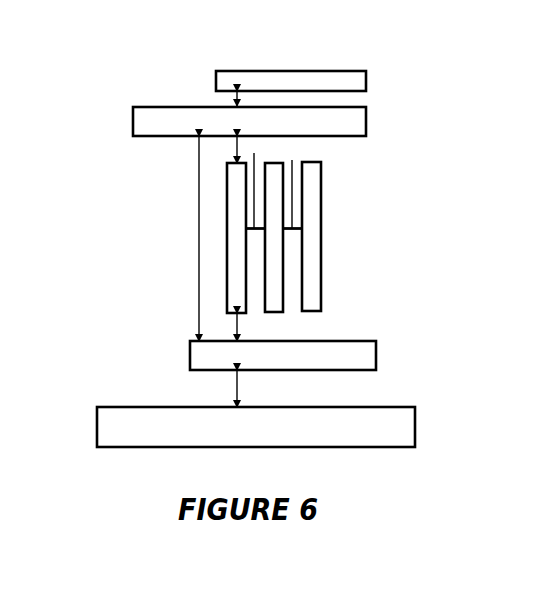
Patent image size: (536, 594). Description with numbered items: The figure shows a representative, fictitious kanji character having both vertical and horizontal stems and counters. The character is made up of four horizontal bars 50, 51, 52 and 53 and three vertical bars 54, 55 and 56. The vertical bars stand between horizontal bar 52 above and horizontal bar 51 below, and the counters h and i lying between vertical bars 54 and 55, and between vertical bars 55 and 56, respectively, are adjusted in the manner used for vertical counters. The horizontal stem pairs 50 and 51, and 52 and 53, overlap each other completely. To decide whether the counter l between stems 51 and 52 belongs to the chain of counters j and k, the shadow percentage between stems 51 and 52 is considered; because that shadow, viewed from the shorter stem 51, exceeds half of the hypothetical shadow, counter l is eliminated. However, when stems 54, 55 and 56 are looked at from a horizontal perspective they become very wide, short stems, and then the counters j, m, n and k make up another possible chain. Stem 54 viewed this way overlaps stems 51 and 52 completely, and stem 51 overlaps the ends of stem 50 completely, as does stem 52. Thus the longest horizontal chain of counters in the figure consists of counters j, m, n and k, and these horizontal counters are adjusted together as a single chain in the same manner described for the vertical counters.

The horizontal bar 50 is at (97, 418).
The horizontal bar 51 is at (190, 354).
The horizontal bar 52 is at (133, 114).
The horizontal bar 53 is at (301, 71).
The vertical bar 54 is at (227, 280).
The vertical bar 55 is at (284, 296).
The vertical bar 56 is at (322, 228).
The counter k is at (235, 98).
The counter n is at (234, 153).
The counter l is at (198, 200).
The counter h is at (254, 153).
The counter i is at (292, 160).
The counter m is at (243, 333).
The counter j is at (240, 393).